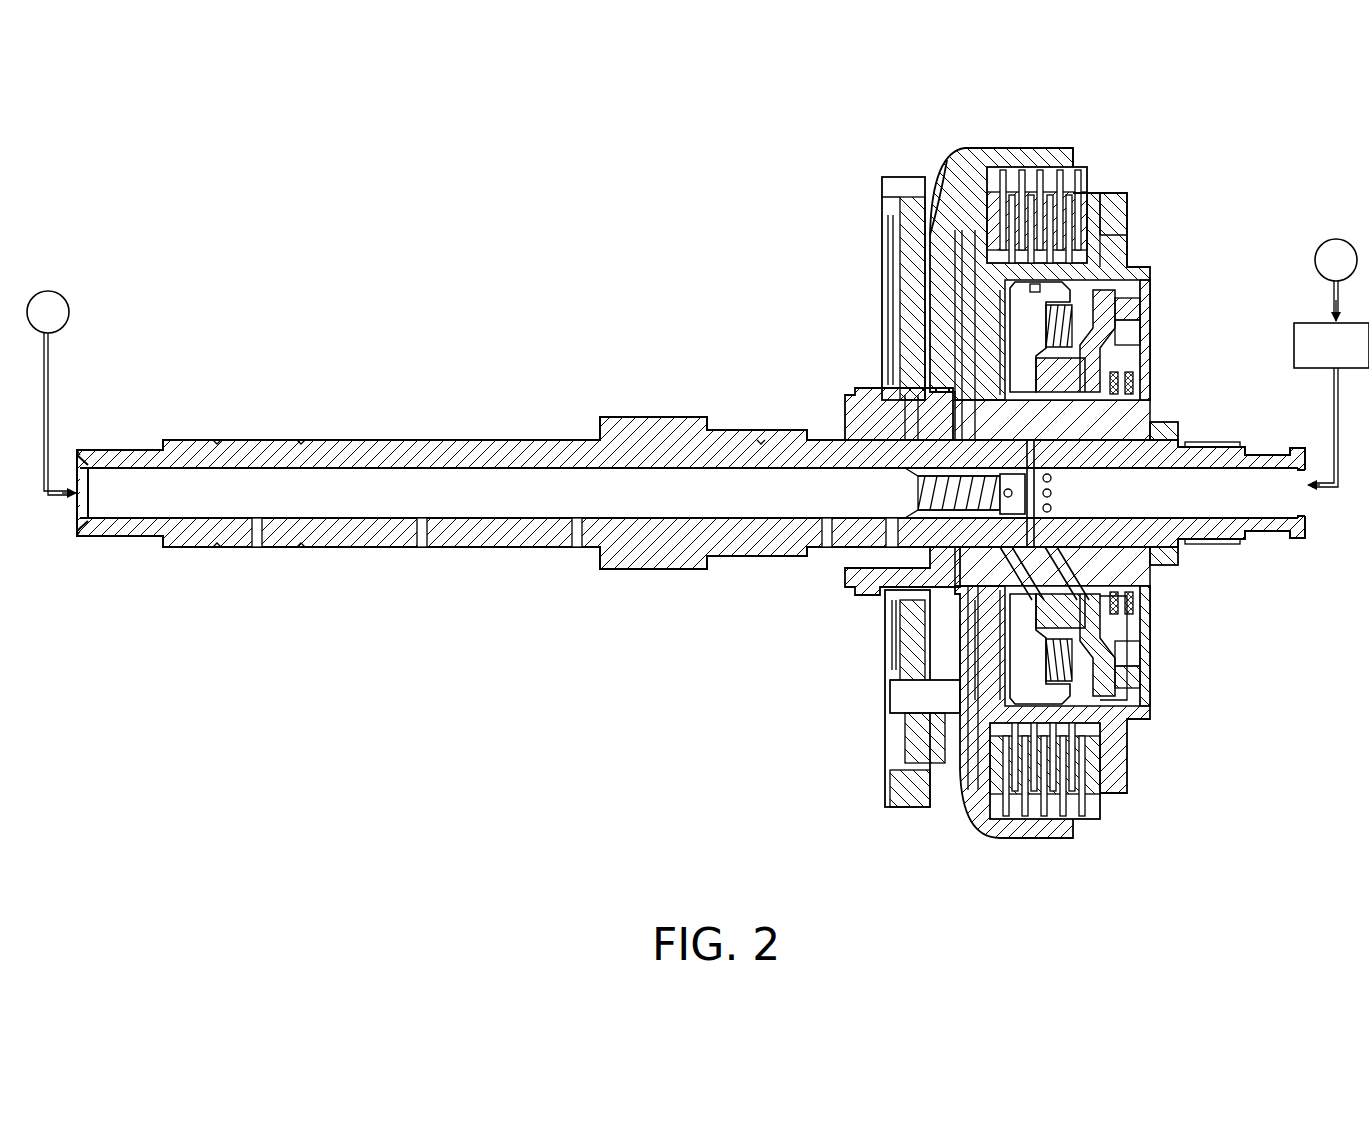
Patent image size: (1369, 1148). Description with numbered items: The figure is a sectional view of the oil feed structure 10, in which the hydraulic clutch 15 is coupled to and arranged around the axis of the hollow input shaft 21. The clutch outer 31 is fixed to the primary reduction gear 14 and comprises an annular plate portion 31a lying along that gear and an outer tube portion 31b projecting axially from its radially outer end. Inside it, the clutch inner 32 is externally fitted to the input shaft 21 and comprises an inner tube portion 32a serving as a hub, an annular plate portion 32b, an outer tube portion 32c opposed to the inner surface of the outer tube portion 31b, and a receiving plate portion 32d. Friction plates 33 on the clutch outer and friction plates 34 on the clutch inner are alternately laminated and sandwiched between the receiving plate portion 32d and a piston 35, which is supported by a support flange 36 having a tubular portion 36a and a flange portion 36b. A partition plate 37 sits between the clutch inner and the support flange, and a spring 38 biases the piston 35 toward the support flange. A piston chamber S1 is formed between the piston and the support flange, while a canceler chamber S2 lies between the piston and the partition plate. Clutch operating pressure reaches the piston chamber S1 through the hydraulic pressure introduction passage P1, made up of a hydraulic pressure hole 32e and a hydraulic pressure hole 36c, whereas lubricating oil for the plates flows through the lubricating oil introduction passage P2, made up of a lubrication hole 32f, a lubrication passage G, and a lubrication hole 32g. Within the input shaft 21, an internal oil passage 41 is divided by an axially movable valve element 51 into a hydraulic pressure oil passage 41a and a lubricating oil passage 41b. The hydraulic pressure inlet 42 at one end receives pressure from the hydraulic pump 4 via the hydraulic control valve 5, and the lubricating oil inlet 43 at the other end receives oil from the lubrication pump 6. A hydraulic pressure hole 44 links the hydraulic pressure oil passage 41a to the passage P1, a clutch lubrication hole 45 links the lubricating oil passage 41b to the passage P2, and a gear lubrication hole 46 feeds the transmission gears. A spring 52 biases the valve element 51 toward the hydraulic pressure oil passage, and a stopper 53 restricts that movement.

The hydraulic pump 4 is at (1334, 238).
The hydraulic control valve 5 is at (1302, 323).
The lubrication pump 6 is at (48, 290).
The oil feed structure 10 is at (704, 258).
The primary reduction gear 14 is at (882, 190).
The hydraulic clutch 15 is at (1150, 123).
The input shaft 21 is at (252, 437).
The clutch outer 31 is at (960, 225).
The annular plate portion 31a is at (940, 265).
The outer tube portion 31b is at (1000, 148).
The clutch inner 32 is at (1178, 428).
The inner tube portion 32a is at (1150, 390).
The annular plate portion 32b is at (985, 350).
The outer tube portion 32c is at (1150, 240).
The receiving plate portion 32d is at (945, 205).
The hydraulic pressure hole 32e is at (1100, 560).
The lubrication hole 32f is at (1000, 575).
The lubrication hole 32g is at (1045, 792).
The friction plates 33 is at (1090, 200).
The friction plates 34 is at (1100, 190).
The piston 35 is at (1140, 210).
The support flange 36 is at (1140, 325).
The tubular portion 36a is at (1150, 355).
The flange portion 36b is at (1120, 310).
The hydraulic pressure hole 36c is at (1130, 660).
The partition plate 37 is at (990, 305).
The spring 38 is at (1100, 300).
The internal oil passage 41 is at (505, 488).
The hydraulic pressure oil passage 41a is at (1257, 497).
The lubricating oil passage 41b is at (358, 495).
The hydraulic pressure inlet 42 is at (1308, 500).
The lubricating oil inlet 43 is at (80, 515).
The hydraulic pressure hole 44 is at (1180, 543).
The clutch lubrication hole 45 is at (880, 592).
The gear lubrication hole 46 is at (577, 525).
The valve element 51 is at (900, 440).
The spring 52 is at (995, 530).
The stopper 53 is at (1053, 492).
The lubrication passage G is at (960, 650).
The hydraulic pressure introduction passage P1 is at (1130, 620).
The lubricating oil introduction passage P2 is at (1000, 620).
The piston chamber S1 is at (1140, 690).
The canceler chamber S2 is at (1120, 760).